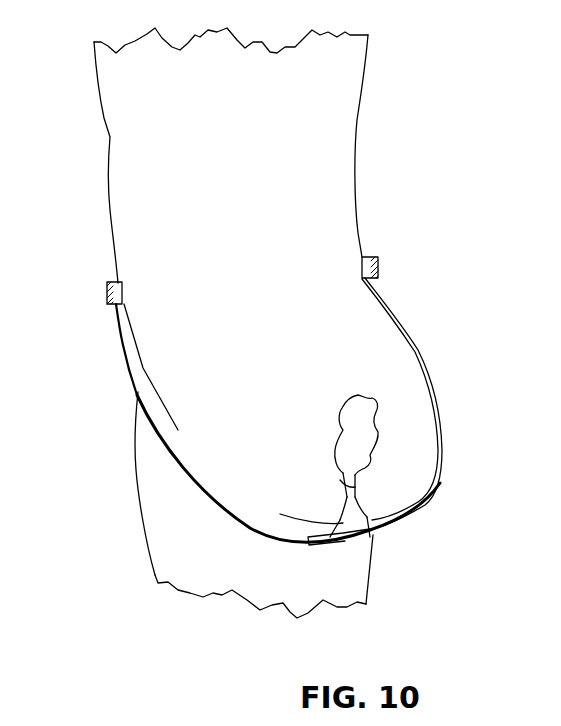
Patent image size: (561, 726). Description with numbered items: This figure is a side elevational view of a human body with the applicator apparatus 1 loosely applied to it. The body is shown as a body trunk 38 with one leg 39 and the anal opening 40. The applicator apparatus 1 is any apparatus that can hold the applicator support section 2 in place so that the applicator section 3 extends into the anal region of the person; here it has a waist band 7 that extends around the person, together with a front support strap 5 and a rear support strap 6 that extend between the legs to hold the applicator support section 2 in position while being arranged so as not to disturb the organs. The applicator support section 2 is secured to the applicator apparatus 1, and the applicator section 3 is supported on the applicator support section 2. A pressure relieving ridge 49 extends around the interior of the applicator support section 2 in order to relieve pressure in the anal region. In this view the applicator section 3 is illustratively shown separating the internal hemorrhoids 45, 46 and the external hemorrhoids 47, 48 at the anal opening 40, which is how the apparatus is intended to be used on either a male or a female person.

The applicator apparatus 1 is at (433, 325).
The applicator support section 2 is at (410, 503).
The applicator section 3 is at (343, 510).
The front support strap 5 is at (122, 355).
The rear support strap 6 is at (436, 380).
The waist band 7 is at (107, 291).
The body trunk 38 is at (104, 120).
The leg 39 is at (155, 577).
The anal opening 40 is at (343, 485).
The internal hemorrhoid 45 is at (372, 460).
The internal hemorrhoid 46 is at (357, 495).
The external hemorrhoid 47 is at (375, 550).
The external hemorrhoid 48 is at (343, 522).
The pressure relieving ridge 49 is at (352, 540).